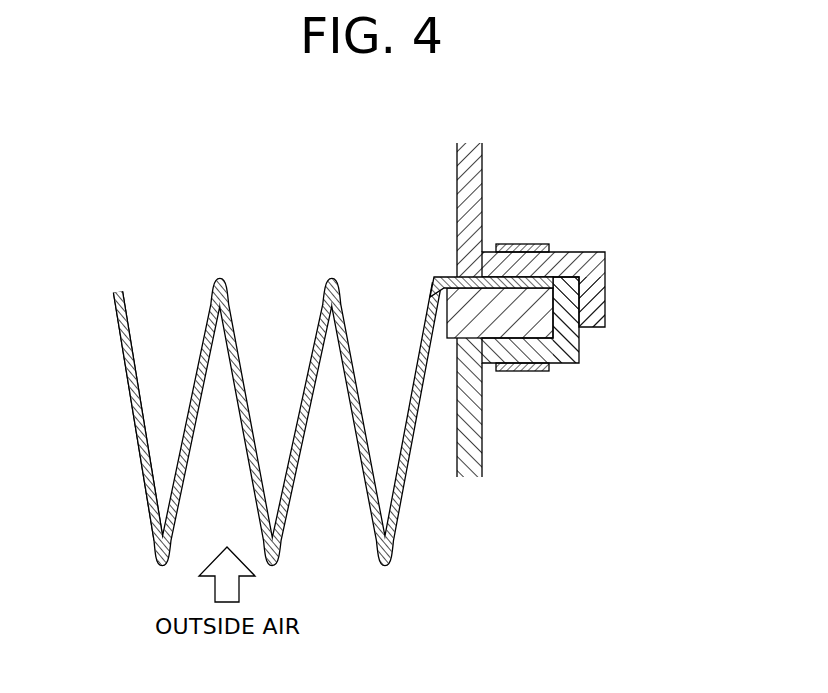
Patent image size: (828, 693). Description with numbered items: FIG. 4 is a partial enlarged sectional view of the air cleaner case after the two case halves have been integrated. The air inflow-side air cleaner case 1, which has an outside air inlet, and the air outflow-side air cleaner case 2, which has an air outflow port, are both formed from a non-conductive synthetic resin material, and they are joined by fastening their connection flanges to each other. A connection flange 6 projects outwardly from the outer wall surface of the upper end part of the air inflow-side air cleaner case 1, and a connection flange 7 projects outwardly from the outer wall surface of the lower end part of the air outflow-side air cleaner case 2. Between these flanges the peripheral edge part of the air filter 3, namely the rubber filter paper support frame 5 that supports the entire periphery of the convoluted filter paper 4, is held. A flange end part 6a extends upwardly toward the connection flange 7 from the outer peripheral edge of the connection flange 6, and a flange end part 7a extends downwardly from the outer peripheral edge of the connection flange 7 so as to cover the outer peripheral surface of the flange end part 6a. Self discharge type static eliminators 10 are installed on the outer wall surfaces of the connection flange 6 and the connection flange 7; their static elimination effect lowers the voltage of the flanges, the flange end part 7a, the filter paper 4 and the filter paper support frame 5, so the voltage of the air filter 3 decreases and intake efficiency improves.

The air inflow-side air cleaner case 1 is at (482, 443).
The air outflow-side air cleaner case 2 is at (479, 179).
The air filter 3 is at (283, 267).
The filter paper 4 is at (128, 404).
The filter paper support frame 5 is at (452, 308).
The connection flange 6 is at (573, 349).
The flange end part 6a is at (575, 338).
The connection flange 7 is at (589, 262).
The flange end part 7a is at (600, 300).
The self discharge type static eliminator 10 is at (530, 244).